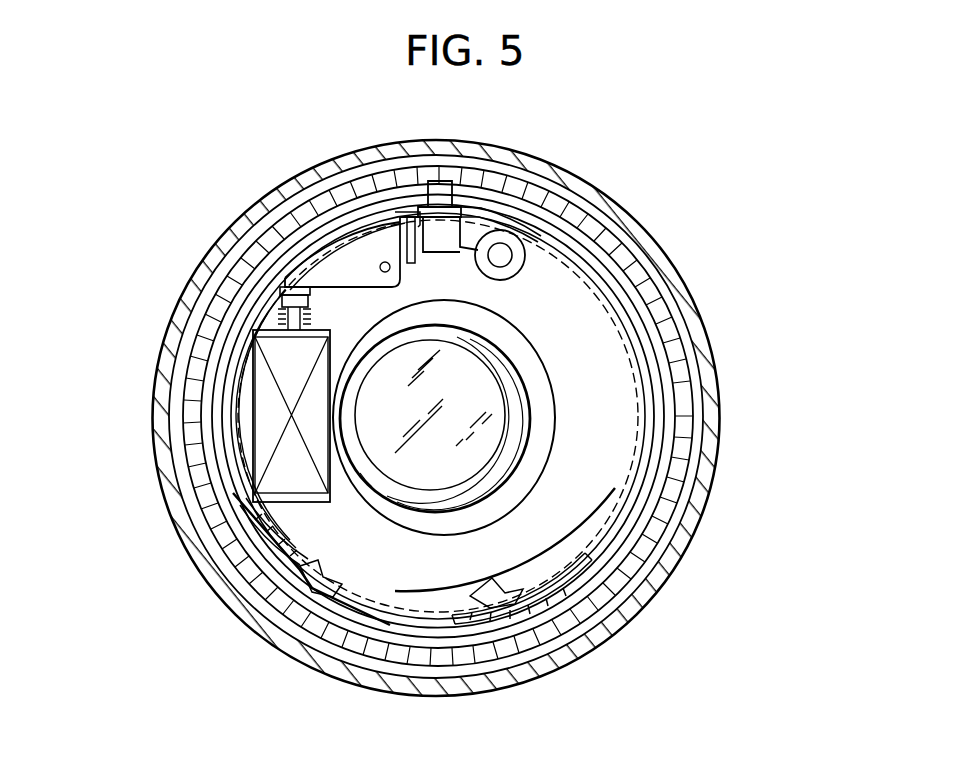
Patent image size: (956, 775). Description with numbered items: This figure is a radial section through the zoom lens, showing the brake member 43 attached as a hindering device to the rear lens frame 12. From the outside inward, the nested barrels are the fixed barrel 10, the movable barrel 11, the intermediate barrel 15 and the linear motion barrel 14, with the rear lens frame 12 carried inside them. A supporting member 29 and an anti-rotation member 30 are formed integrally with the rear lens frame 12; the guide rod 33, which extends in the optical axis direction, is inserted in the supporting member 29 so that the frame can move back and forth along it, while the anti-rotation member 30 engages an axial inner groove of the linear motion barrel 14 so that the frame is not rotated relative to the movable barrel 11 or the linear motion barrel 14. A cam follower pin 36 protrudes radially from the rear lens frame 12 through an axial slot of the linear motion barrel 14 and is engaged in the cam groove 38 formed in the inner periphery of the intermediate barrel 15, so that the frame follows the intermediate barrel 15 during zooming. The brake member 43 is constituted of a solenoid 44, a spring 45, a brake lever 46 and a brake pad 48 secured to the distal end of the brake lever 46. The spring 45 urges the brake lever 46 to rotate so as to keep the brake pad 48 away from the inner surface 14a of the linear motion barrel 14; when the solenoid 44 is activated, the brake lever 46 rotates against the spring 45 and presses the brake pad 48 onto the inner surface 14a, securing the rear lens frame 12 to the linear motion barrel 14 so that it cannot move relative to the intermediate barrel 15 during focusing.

The fixed barrel 10 is at (722, 330).
The movable barrel 11 is at (673, 448).
The rear lens frame 12 is at (592, 390).
The linear motion barrel 14 is at (662, 484).
The inner surface of the linear motion barrel 14a is at (345, 242).
The intermediate barrel 15 is at (707, 423).
The supporting member 29 is at (473, 268).
The anti-rotation member 30 is at (598, 514).
The guide rod 33 is at (502, 260).
The cam follower pin 36 is at (457, 204).
The cam groove 38 is at (440, 180).
The brake member 43 is at (95, 250).
The solenoid 44 is at (265, 397).
The spring 45 is at (282, 314).
The brake lever 46 is at (278, 282).
The brake pad 48 is at (420, 205).